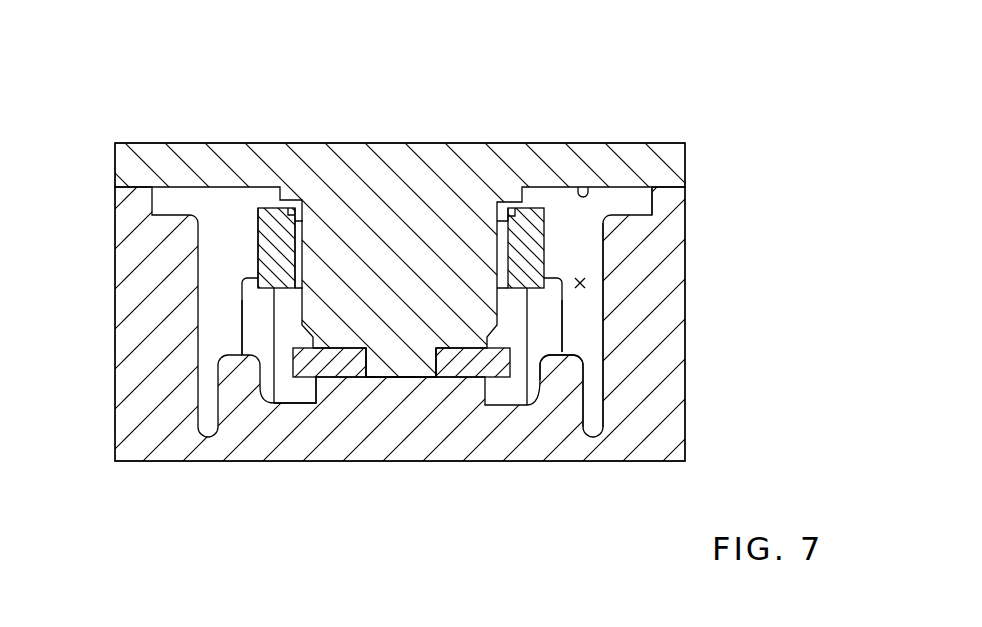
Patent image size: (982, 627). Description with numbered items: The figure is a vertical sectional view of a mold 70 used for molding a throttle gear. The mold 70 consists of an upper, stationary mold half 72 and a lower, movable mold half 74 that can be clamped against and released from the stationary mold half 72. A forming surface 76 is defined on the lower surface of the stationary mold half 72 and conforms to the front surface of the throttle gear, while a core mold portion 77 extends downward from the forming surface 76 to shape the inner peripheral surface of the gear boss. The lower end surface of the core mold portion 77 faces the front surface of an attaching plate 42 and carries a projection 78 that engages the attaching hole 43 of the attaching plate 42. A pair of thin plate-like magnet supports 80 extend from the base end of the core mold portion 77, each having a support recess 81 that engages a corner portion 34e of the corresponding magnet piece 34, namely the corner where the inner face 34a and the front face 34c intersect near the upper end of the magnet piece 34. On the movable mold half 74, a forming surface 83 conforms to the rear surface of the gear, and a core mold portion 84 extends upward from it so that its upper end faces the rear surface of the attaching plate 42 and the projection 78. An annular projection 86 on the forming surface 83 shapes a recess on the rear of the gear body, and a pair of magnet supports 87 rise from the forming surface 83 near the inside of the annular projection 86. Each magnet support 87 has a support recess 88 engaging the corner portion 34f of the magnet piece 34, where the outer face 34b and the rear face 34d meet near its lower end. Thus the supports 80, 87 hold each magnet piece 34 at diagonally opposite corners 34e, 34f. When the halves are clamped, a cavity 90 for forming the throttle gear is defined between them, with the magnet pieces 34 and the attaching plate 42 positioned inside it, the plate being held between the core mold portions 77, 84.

The mold 70 is at (674, 96).
The stationary mold half 72 is at (628, 141).
The movable mold half 74 is at (612, 464).
The forming surface 76 is at (584, 186).
The core mold portion 77 is at (418, 257).
The projection 78 is at (377, 367).
The magnet support 80 is at (300, 205).
The support recess 81 is at (299, 219).
The forming surface 83 is at (612, 347).
The core mold portion 84 is at (345, 393).
The annular projection 86 is at (567, 375).
The magnet support 87 is at (252, 333).
The support recess 88 is at (257, 289).
The cavity 90 is at (588, 283).
The attaching plate 42 is at (477, 368).
The attaching hole 43 is at (433, 360).
The magnet piece 34 is at (256, 206).
The inner face 34a is at (303, 250).
The outer face 34b is at (258, 241).
The front face 34c is at (286, 207).
The rear face 34d is at (297, 290).
The corner portion 34e is at (257, 216).
The corner portion 34f is at (260, 274).